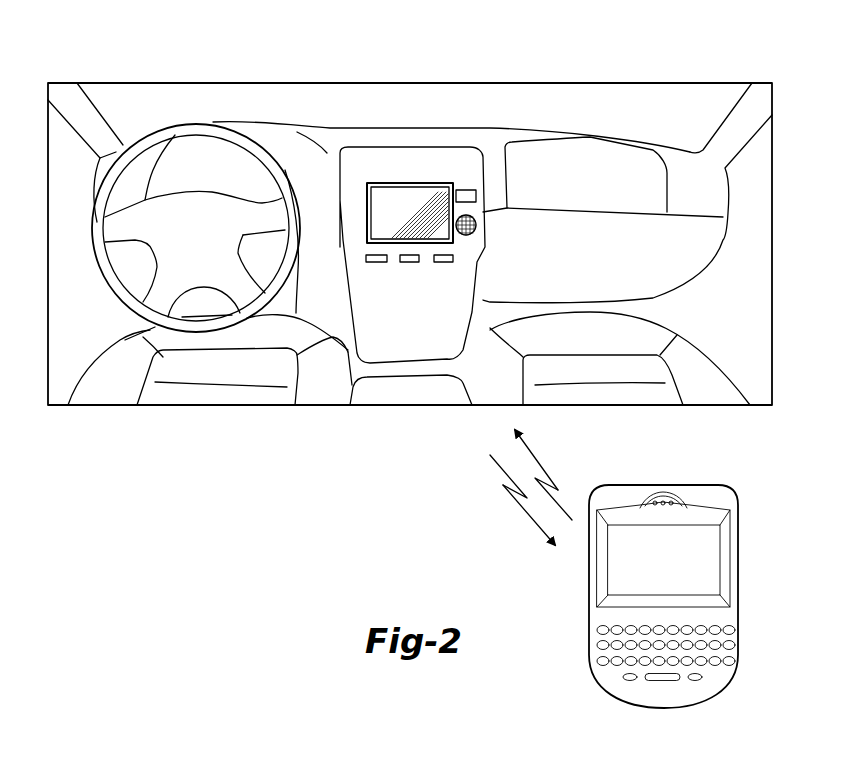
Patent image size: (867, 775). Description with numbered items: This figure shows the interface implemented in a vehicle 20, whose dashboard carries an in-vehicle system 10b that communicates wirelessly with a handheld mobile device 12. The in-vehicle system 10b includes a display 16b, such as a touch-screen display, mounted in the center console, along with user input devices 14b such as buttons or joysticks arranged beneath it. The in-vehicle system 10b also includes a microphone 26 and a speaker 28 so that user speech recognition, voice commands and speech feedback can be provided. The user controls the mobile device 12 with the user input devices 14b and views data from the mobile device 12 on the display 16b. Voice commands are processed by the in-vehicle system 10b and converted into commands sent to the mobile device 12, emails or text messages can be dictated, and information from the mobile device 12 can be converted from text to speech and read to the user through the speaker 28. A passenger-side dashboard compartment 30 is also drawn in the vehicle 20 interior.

The vehicle 20 is at (693, 81).
The in-vehicle system 10b is at (388, 180).
The display 16b is at (383, 210).
The microphone 26 is at (467, 189).
The speaker 28 is at (478, 229).
The user input devices 14b is at (443, 262).
The glove box 30 is at (604, 194).
The mobile device 12 is at (724, 486).